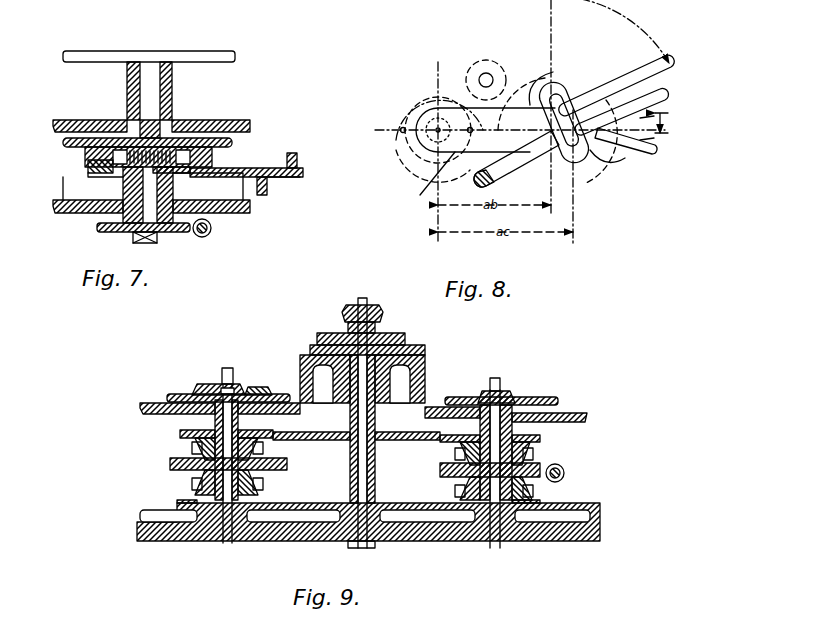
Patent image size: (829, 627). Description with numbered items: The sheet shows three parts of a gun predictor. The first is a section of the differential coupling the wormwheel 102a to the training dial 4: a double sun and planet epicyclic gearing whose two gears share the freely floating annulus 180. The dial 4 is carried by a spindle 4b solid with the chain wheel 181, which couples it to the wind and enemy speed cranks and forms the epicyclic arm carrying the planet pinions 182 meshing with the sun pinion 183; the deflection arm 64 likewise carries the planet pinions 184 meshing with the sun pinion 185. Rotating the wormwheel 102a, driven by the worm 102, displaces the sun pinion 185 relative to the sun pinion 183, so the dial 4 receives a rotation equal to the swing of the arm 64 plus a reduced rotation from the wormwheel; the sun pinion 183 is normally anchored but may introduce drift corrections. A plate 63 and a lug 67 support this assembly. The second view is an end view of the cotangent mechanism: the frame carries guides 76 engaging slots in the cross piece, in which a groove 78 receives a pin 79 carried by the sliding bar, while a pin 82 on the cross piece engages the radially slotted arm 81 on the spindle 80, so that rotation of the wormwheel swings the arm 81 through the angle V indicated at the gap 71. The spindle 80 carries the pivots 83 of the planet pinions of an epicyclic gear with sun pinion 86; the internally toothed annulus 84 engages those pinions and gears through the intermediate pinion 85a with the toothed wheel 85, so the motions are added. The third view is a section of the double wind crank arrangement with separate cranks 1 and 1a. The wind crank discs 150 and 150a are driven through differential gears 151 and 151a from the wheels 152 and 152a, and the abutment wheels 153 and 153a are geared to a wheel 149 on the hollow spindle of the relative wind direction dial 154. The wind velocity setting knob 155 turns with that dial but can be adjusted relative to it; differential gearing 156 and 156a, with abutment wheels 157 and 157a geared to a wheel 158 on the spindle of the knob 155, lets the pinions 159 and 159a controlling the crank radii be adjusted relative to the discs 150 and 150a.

In FIG. 7, the training dial 4 is at (205, 60).
In FIG. 7, the spindle 4b is at (150, 107).
In FIG. 7, the sun pinion 183 is at (125, 120).
In FIG. 7, the annulus 180 is at (212, 157).
In FIG. 7, the chain wheel 181 is at (88, 155).
In FIG. 7, the planet pinions 182 is at (102, 170).
In FIG. 7, the plate 63 is at (297, 160).
In FIG. 7, the deflection arm 64 is at (276, 180).
In FIG. 7, the lug 67 is at (258, 197).
In FIG. 7, the planet pinions 184 is at (201, 190).
In FIG. 7, the sun pinion 185 is at (88, 193).
In FIG. 7, the worm 102 is at (209, 236).
In FIG. 7, the wormwheel 102a is at (110, 228).
In FIG. 8, the sun pinion 86 is at (420, 118).
In FIG. 8, the pivots of the planet pinions 83 is at (410, 140).
In FIG. 8, the internally toothed annulus 84 is at (424, 90).
In FIG. 8, the spindle 80 is at (414, 166).
In FIG. 8, the radially slotted arm 81 is at (429, 180).
In FIG. 8, the toothed wheel 85 is at (555, 70).
In FIG. 8, the intermediate pinion 85a is at (486, 60).
In FIG. 8, the pin 82 is at (545, 108).
In FIG. 8, the groove 78 is at (606, 82).
In FIG. 8, the gap 71 is at (661, 116).
In FIG. 8, the guides 76 is at (512, 176).
In FIG. 8, the pin 79 is at (622, 160).
In FIG. 9, the wheel 158 is at (388, 503).
In FIG. 9, the relative wind direction dial 154 is at (428, 352).
In FIG. 9, the wind velocity setting knob 155 is at (385, 330).
In FIG. 9, the wheel 149 is at (330, 440).
In FIG. 9, the crank 1 is at (220, 377).
In FIG. 9, the crank 1a is at (503, 386).
In FIG. 9, the pinion 159 is at (242, 392).
In FIG. 9, the pinion 159a is at (486, 392).
In FIG. 9, the wind crank disc 150 is at (178, 392).
In FIG. 9, the wind crank disc 150a is at (550, 397).
In FIG. 9, the abutment wheel 153 is at (178, 434).
In FIG. 9, the abutment wheel 153a is at (545, 440).
In FIG. 9, the differential gear 151 is at (190, 448).
In FIG. 9, the differential gear 151a is at (540, 460).
In FIG. 9, the wheel 152 is at (172, 463).
In FIG. 9, the wheel 152a is at (535, 480).
In FIG. 9, the differential gearing 156 is at (197, 487).
In FIG. 9, the differential gearing 156a is at (535, 492).
In FIG. 9, the abutment wheel 157 is at (190, 505).
In FIG. 9, the abutment wheel 157a is at (540, 512).